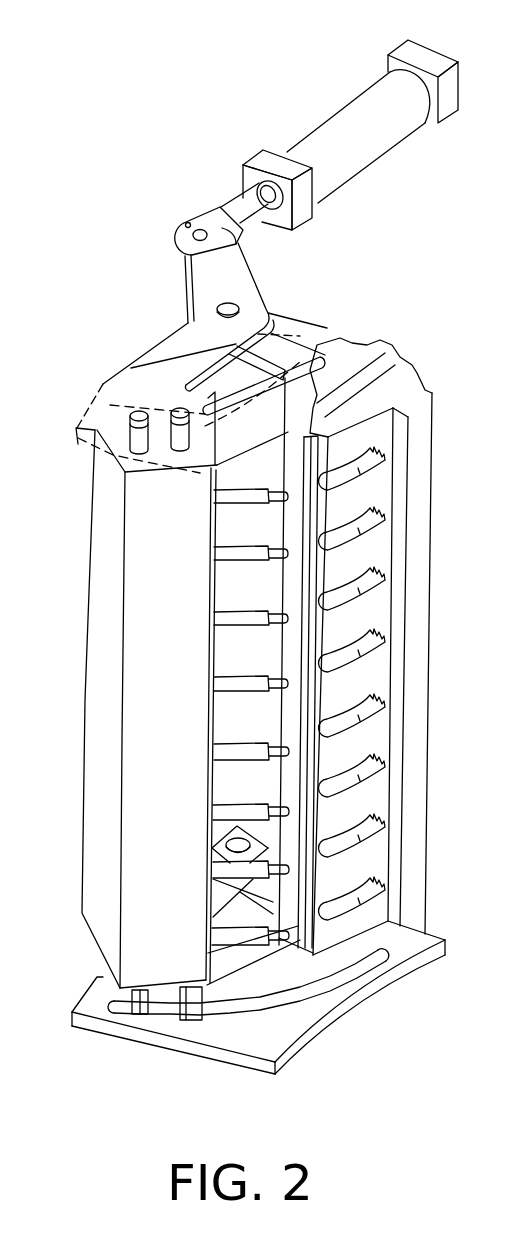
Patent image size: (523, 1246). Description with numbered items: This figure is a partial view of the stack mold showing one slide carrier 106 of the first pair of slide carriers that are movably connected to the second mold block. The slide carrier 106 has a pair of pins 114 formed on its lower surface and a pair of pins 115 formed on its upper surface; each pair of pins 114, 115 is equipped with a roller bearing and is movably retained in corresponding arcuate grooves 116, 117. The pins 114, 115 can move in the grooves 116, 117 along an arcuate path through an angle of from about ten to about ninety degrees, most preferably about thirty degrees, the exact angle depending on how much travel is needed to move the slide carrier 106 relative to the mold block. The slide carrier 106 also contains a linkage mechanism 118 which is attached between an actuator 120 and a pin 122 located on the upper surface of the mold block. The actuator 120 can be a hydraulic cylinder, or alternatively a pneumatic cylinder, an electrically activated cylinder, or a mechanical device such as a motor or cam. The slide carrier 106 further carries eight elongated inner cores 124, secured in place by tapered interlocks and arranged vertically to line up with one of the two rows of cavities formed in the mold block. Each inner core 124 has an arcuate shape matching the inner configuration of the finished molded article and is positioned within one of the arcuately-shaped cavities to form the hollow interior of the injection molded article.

The slide carrier 106 is at (100, 716).
The pins 114 is at (143, 1008).
The pins 115 is at (180, 413).
The arcuate groove 116 is at (320, 1000).
The arcuate groove 117 is at (330, 341).
The linkage mechanism 118 is at (165, 258).
The actuator 120 is at (327, 133).
The pin 122 is at (240, 303).
The inner cores 124 is at (240, 628).